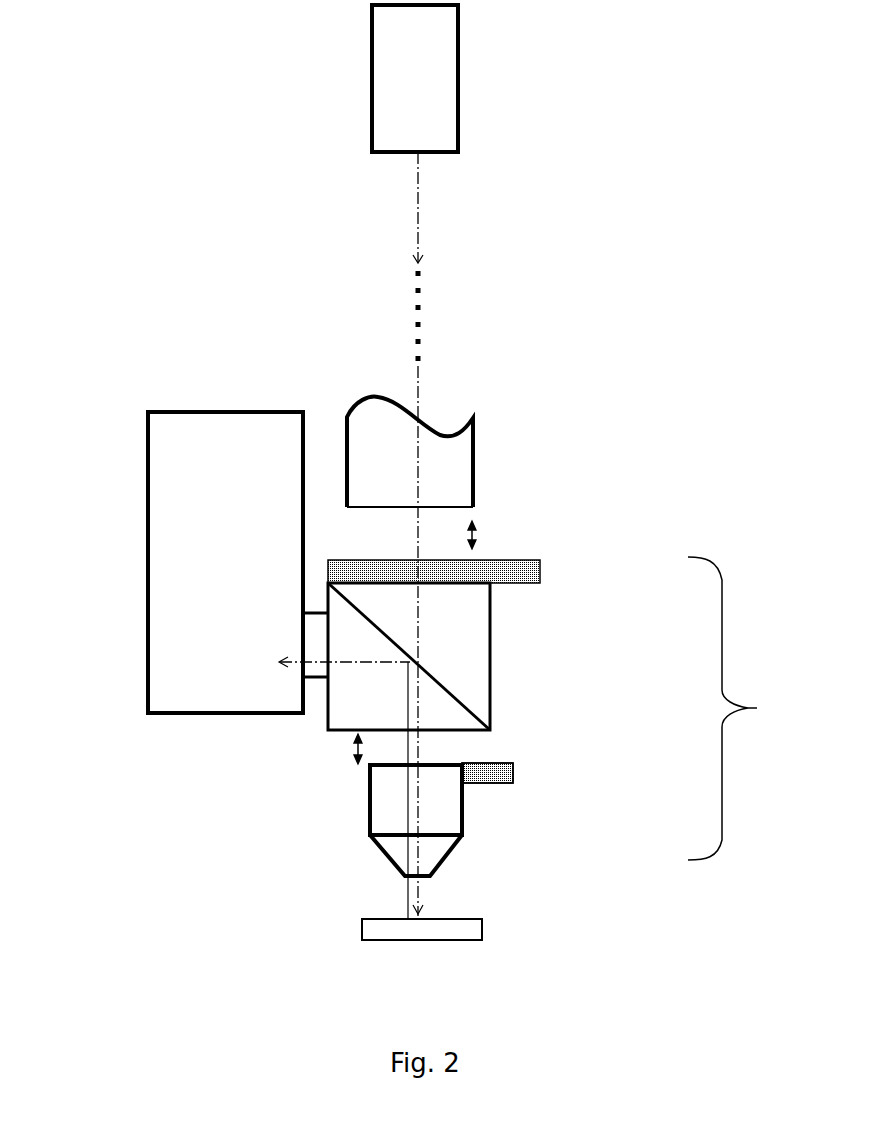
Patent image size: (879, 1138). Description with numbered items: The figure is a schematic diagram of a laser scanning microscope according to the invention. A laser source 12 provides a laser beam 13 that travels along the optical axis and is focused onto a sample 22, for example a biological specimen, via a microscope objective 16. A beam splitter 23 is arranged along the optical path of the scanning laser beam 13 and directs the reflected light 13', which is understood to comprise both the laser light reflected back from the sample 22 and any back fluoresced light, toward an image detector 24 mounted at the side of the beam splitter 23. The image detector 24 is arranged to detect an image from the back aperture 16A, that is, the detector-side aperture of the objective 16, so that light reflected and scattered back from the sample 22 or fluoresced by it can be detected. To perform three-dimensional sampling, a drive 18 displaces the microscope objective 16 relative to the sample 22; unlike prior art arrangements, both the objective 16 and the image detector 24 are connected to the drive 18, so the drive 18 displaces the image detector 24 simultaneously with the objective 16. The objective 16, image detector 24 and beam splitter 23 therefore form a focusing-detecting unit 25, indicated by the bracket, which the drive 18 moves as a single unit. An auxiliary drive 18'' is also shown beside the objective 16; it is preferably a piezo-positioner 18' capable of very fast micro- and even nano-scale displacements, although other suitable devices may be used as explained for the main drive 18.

The laser source 12 is at (458, 75).
The laser beam 13 is at (475, 534).
The reflected light 13' is at (333, 790).
The microscope objective 16 is at (462, 805).
The back aperture 16A is at (440, 763).
The drive 18 is at (500, 520).
The piezo-positioner 18' is at (578, 770).
The auxiliary drive 18'' is at (491, 773).
The sample 22 is at (482, 930).
The beam splitter 23 is at (490, 655).
The image detector 24 is at (148, 580).
The focusing-detecting unit 25 is at (748, 708).